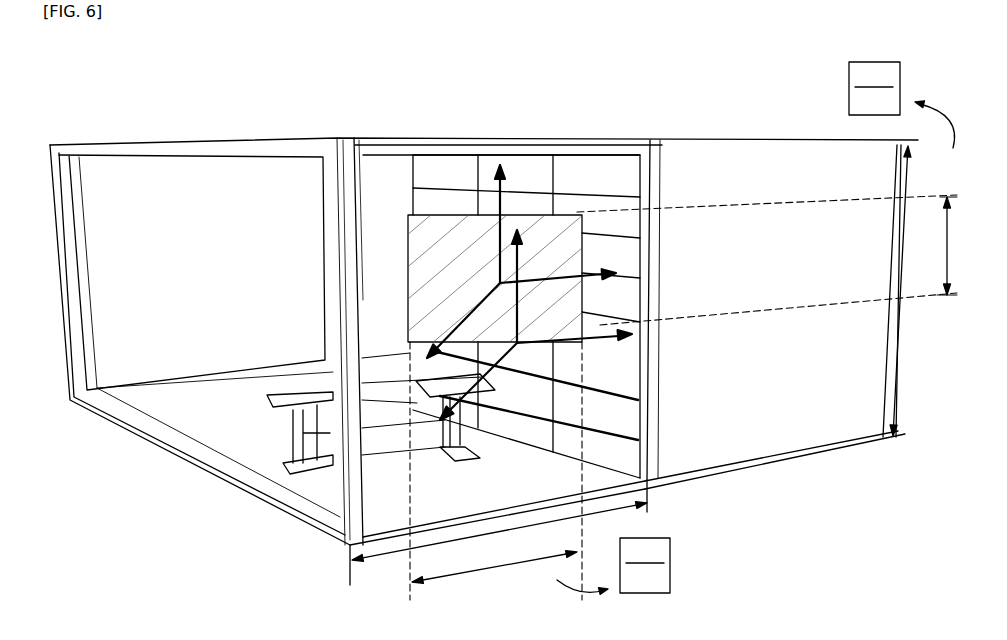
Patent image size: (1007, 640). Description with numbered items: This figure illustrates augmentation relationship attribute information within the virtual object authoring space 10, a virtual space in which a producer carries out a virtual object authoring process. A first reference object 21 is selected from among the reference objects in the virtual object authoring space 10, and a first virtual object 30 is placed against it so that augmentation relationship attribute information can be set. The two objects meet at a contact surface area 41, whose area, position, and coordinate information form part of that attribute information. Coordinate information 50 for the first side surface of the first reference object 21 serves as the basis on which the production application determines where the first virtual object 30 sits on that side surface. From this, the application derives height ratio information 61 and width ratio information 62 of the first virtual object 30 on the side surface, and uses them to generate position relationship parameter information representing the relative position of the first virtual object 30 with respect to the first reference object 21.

The virtual object authoring space 10 is at (80, 90).
The first reference object 21 is at (703, 175).
The first virtual object 30 is at (568, 237).
The contact surface area 41 is at (409, 249).
The coordinate information 50 is at (515, 340).
The height ratio information 61 is at (849, 84).
The width ratio information 62 is at (670, 563).